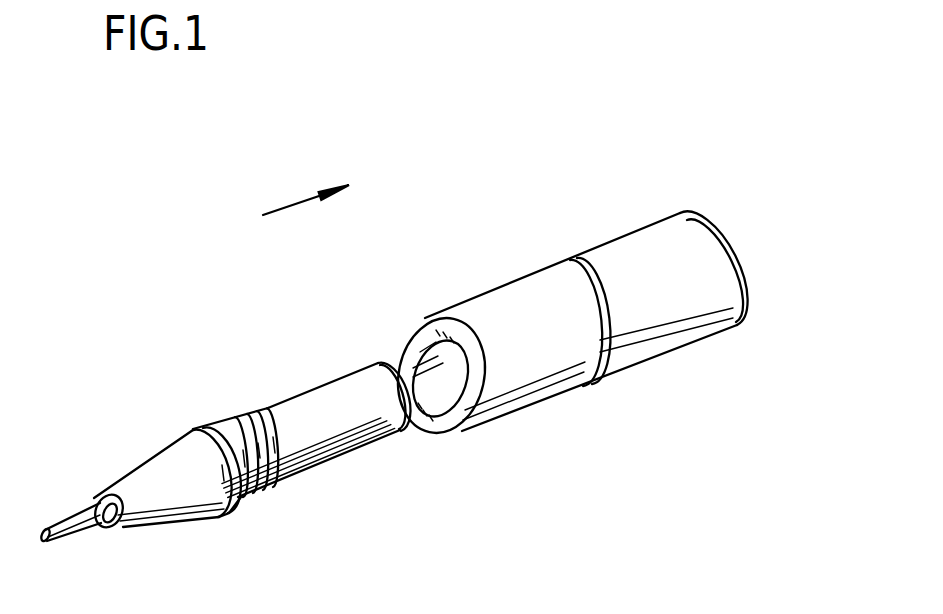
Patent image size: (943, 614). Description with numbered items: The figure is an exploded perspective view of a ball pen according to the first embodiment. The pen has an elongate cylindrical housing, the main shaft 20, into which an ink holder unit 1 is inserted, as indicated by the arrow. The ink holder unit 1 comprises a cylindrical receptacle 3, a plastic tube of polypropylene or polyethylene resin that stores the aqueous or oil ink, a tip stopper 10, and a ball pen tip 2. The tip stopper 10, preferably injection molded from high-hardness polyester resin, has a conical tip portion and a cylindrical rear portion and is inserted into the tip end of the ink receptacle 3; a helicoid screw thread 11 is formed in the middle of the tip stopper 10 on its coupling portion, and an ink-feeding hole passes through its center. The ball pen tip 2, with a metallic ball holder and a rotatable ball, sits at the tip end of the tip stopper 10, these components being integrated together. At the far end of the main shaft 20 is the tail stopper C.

The writing instrument 1 is at (227, 310).
The writing tip 2 is at (102, 527).
The barrel body 3 is at (329, 398).
The nose cone 10 is at (210, 492).
The threaded portion 11 is at (288, 482).
The cap body 20 is at (521, 278).
The cap C is at (568, 292).